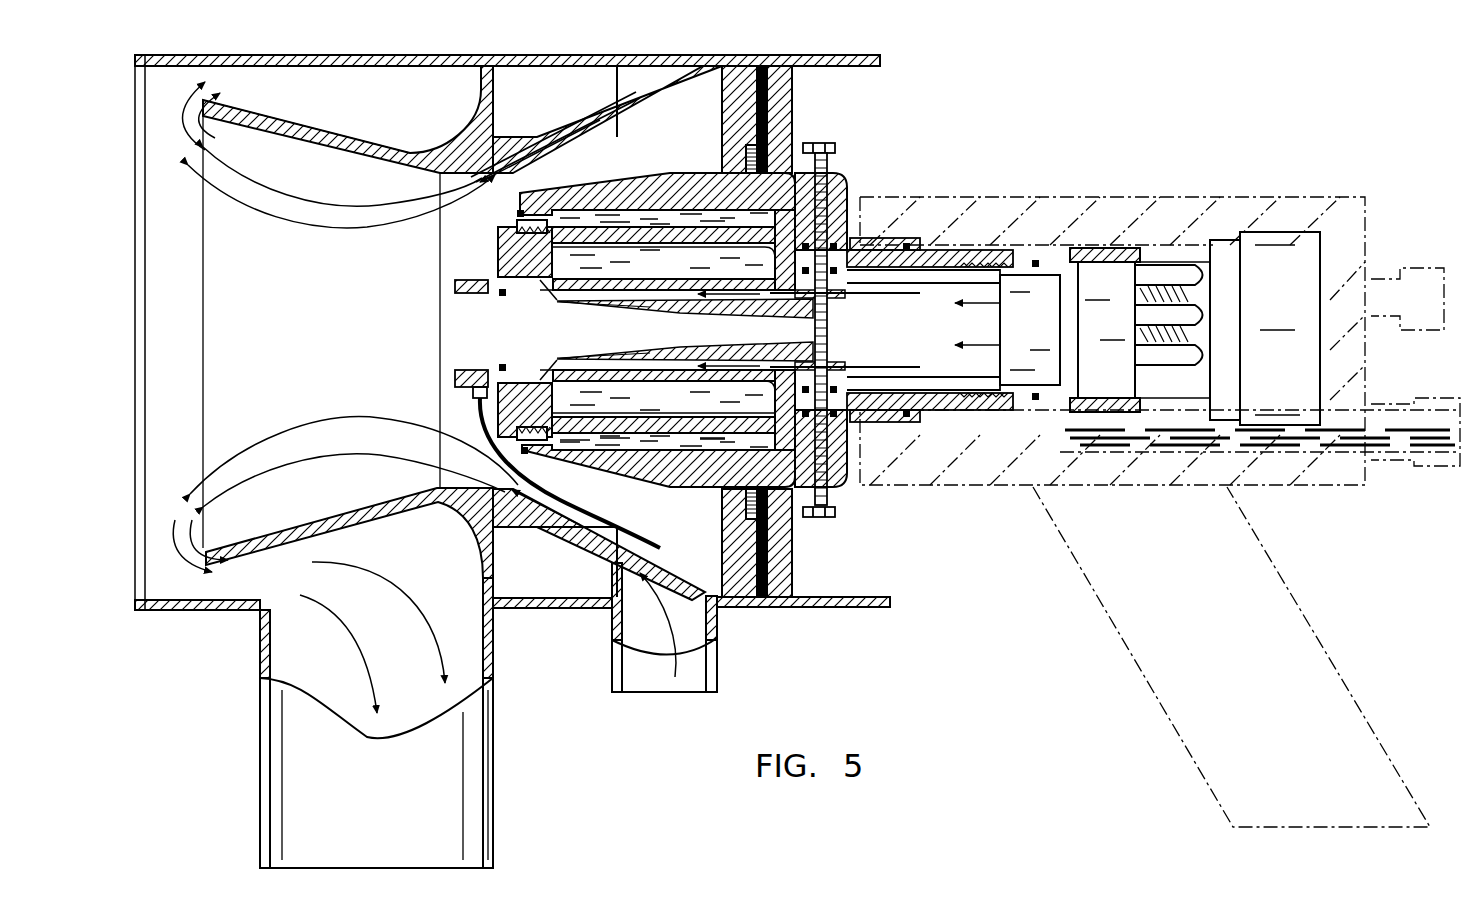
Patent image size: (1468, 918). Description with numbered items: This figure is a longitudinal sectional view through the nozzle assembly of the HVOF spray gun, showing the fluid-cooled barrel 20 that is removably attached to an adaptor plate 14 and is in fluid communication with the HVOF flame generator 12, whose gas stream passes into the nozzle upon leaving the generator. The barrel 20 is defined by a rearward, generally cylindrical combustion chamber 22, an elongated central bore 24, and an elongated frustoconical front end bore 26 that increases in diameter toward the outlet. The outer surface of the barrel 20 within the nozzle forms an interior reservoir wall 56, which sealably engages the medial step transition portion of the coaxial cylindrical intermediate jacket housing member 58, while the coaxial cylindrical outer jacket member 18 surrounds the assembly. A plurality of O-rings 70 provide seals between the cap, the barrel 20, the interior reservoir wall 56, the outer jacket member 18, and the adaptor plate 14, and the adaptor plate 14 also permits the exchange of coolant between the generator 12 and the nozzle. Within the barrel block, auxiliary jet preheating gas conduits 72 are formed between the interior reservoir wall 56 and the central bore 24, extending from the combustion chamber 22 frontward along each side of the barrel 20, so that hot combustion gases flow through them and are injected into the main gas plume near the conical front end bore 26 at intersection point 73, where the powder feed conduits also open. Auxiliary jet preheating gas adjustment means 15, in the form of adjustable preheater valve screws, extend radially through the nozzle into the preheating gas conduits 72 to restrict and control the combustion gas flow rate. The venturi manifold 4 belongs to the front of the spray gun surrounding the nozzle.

The venturi manifold 4 is at (325, 150).
The HVOF flame generator 12 is at (1100, 300).
The adaptor plate 14 is at (1003, 328).
The auxiliary jet preheating gas adjustment means 15 is at (835, 148).
The outer jacket member 18 is at (632, 478).
The barrel 20 is at (712, 312).
The combustion chamber 22 is at (945, 334).
The central bore 24 is at (790, 340).
The frustoconical front end bore 26 is at (701, 340).
The interior reservoir wall 56 is at (650, 275).
The intermediate jacket housing member 58 is at (670, 428).
The O-rings 70 is at (518, 213).
The auxiliary jet preheating gas conduits 72 is at (657, 330).
The intersection point 73 is at (545, 340).